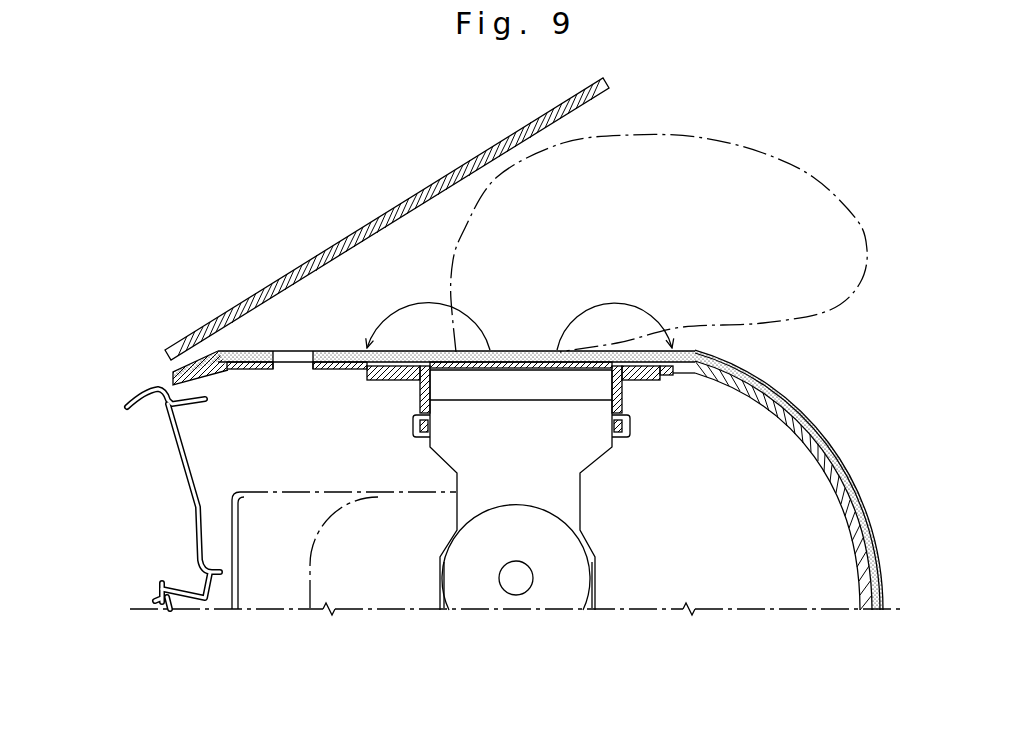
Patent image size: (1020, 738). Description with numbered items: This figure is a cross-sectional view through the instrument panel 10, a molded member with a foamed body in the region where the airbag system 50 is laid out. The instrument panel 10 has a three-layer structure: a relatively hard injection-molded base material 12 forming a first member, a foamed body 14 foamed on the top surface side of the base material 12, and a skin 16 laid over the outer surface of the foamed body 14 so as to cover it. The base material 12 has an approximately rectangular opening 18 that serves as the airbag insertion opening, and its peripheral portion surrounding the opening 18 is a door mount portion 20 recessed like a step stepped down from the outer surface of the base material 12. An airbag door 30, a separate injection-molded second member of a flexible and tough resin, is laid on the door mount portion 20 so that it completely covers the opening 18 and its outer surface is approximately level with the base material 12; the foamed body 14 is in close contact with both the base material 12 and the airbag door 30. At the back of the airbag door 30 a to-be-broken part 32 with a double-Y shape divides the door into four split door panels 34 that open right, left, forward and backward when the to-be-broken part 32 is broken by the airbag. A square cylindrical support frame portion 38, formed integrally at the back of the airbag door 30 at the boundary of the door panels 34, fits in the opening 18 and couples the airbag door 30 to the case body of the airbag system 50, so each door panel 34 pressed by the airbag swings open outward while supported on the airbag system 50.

The instrument panel 10 is at (777, 393).
The base material 12 is at (807, 461).
The foamed body 14 is at (827, 447).
The skin 16 is at (807, 421).
The opening 18 is at (420, 393).
The door mount portion 20 is at (656, 370).
The airbag door 30 is at (543, 353).
The to-be-broken part 32 is at (517, 354).
The door panels 34 is at (460, 400).
The support frame portion 38 is at (617, 440).
The airbag system 50 is at (598, 593).